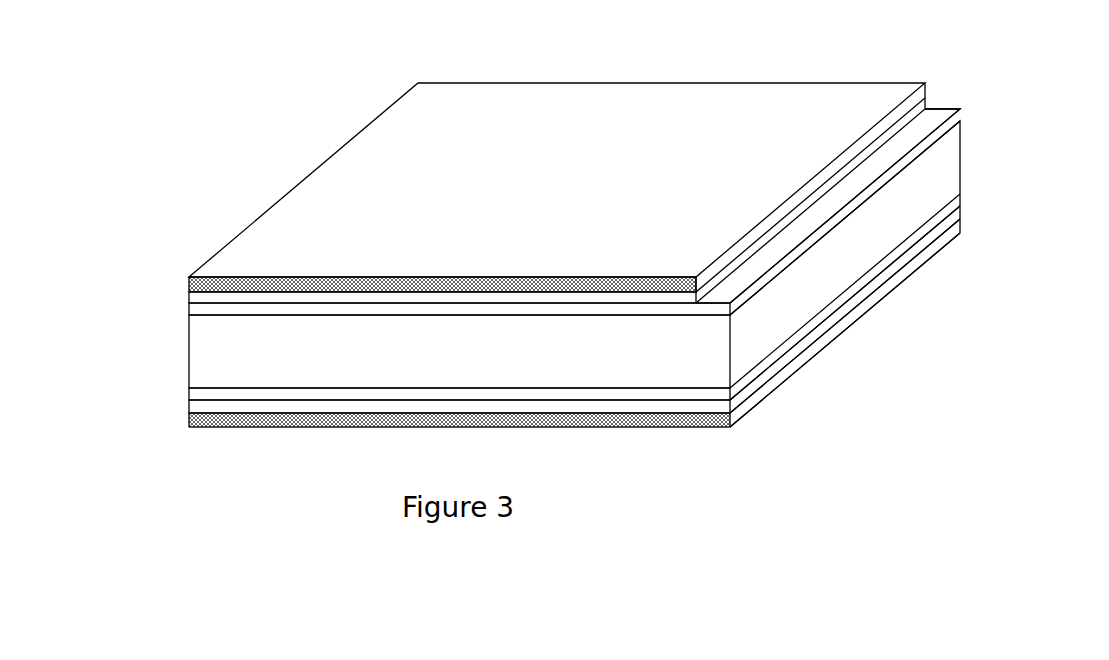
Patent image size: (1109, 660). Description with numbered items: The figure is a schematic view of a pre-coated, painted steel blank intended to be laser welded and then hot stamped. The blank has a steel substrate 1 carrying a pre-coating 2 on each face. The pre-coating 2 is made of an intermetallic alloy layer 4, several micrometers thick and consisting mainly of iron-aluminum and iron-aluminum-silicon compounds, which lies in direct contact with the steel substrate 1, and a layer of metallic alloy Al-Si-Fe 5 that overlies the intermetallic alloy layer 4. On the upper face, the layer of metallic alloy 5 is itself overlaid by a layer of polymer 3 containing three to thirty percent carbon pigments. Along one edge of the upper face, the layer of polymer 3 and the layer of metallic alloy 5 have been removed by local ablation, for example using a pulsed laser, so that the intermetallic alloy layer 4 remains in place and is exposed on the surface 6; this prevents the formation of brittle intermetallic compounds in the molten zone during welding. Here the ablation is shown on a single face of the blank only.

The steel substrate 1 is at (233, 367).
The pre-coating 2 is at (120, 230).
The layer of polymer 3 is at (247, 285).
The intermetallic alloy layer 4 is at (212, 310).
The layer of metallic alloy Al-Si-Fe 5 is at (212, 300).
The surface 6 is at (925, 120).